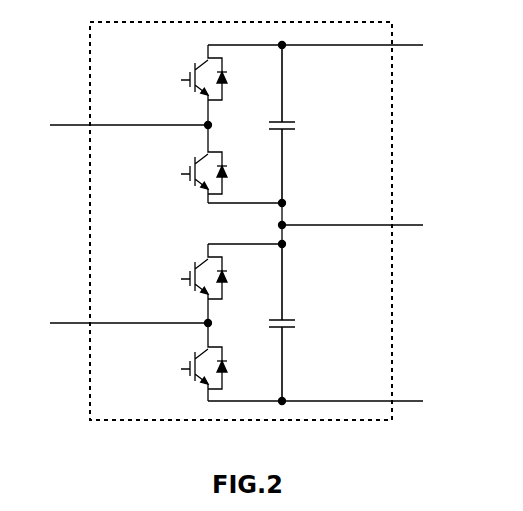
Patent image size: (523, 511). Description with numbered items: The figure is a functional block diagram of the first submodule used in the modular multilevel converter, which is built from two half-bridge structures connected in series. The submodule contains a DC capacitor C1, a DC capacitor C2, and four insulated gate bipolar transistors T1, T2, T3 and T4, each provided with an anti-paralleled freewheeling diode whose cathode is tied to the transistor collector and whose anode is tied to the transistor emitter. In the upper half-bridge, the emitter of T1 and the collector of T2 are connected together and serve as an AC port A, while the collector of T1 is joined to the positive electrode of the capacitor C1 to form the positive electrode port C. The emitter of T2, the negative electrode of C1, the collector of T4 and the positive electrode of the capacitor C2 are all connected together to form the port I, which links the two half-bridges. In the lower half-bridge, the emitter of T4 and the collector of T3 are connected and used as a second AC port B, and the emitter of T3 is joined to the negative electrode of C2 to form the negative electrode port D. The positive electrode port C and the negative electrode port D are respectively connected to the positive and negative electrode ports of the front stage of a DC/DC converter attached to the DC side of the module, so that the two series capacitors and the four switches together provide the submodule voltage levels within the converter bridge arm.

The insulated gate bipolar transistor T1 is at (184, 85).
The insulated gate bipolar transistor T2 is at (184, 164).
The insulated gate bipolar transistor T3 is at (184, 362).
The insulated gate bipolar transistor T4 is at (184, 283).
The DC capacitor C1 is at (306, 124).
The DC capacitor C2 is at (306, 322).
The AC port A is at (119, 123).
The AC port B is at (119, 323).
The positive electrode port C is at (371, 46).
The port I is at (367, 225).
The negative electrode port D is at (372, 403).